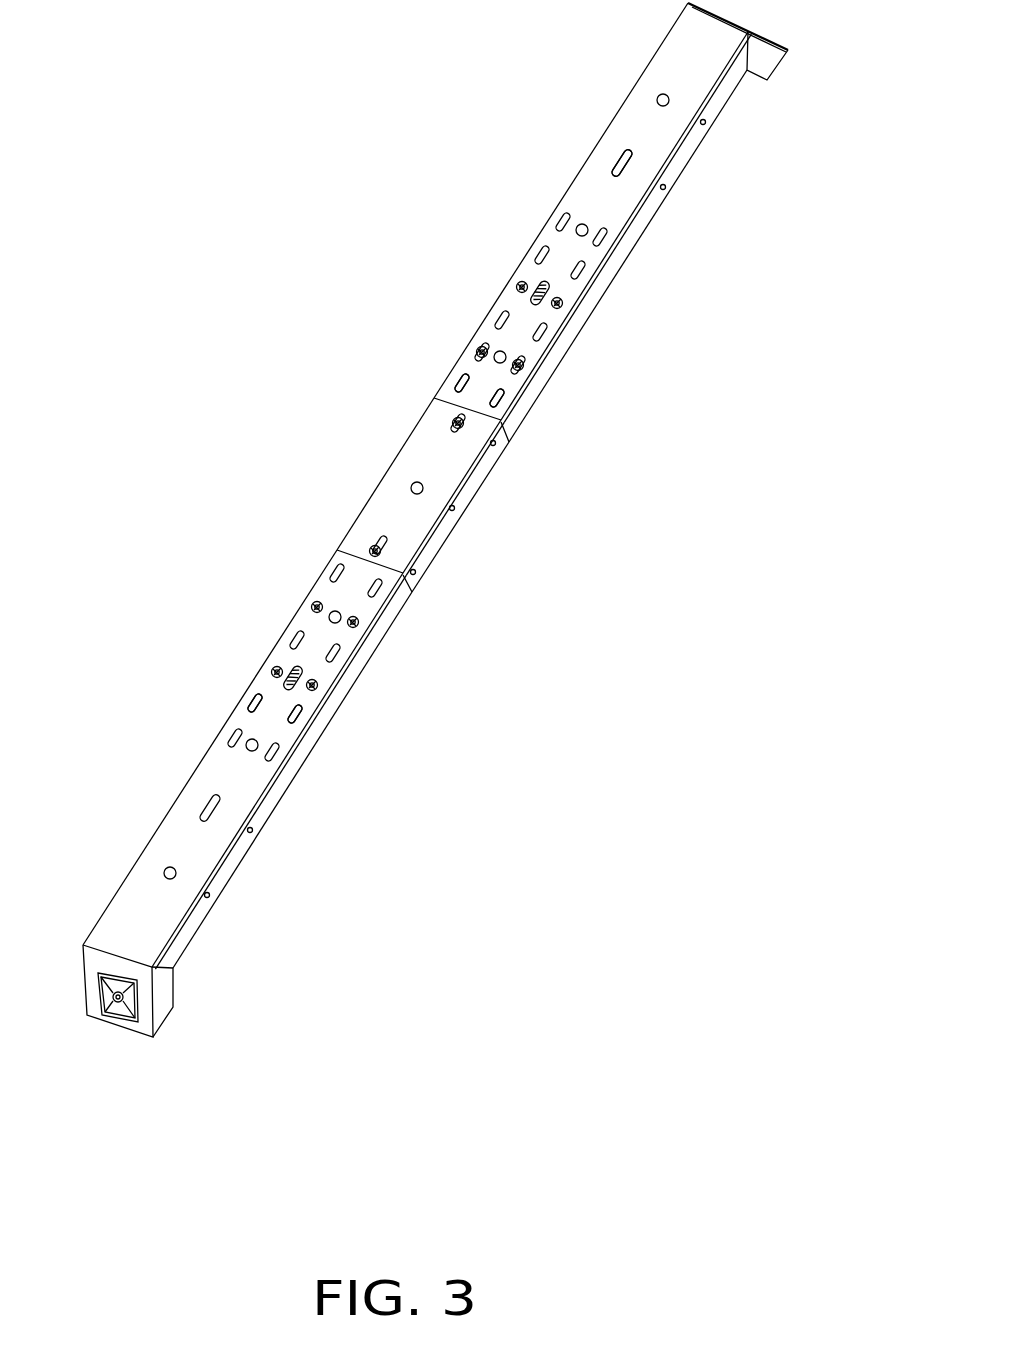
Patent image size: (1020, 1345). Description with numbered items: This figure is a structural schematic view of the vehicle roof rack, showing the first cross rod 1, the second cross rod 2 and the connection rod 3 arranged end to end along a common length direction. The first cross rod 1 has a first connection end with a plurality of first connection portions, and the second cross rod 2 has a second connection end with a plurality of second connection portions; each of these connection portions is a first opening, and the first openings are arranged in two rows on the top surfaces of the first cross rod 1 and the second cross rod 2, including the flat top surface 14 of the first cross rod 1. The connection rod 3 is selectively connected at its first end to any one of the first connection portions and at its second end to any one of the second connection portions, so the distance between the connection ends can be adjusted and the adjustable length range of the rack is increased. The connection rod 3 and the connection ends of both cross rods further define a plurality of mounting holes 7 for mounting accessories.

The first cross rod 1 is at (605, 282).
The second cross rod 2 is at (415, 526).
The connection rod 3 is at (226, 782).
The top surface 14 is at (597, 178).
The mounting hole 7 is at (372, 547).